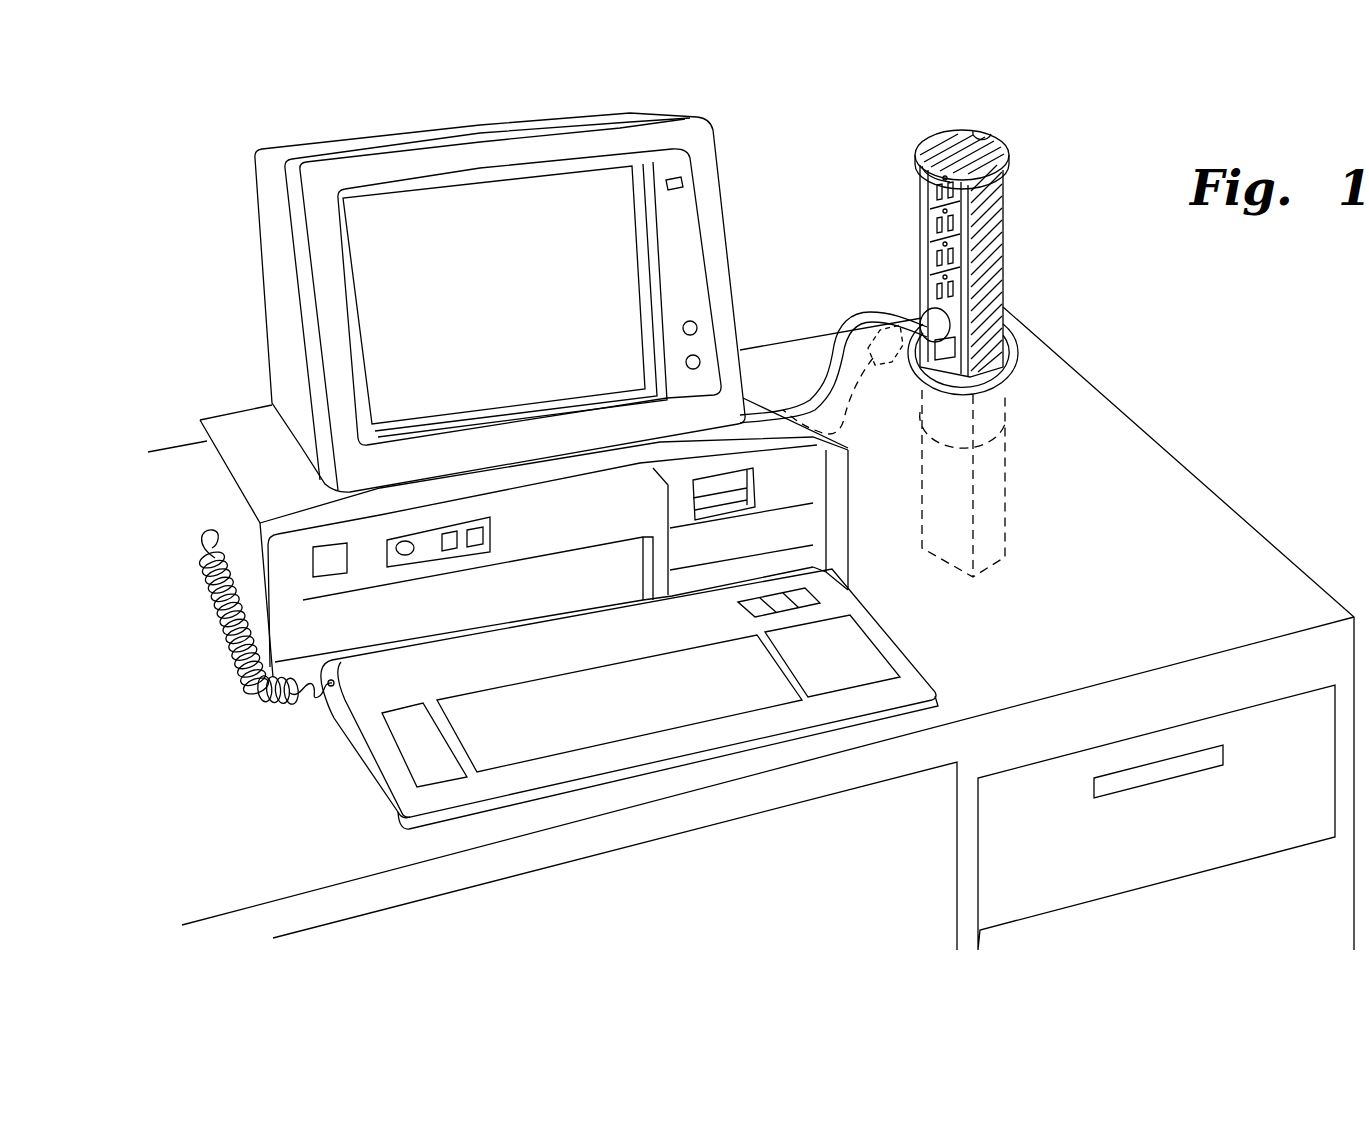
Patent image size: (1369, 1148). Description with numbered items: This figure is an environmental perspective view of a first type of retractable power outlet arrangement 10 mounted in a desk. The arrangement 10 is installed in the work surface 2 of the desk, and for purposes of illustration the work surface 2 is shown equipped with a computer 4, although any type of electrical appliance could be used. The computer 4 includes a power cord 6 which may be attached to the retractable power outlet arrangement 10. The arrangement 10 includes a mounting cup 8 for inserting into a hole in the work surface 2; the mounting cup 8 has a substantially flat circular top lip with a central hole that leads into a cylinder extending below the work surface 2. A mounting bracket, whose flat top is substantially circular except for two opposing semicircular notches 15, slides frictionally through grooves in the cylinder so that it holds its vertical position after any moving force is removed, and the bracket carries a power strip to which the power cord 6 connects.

The work surface 2 is at (1097, 415).
The computer 4 is at (236, 420).
The power cord 6 is at (782, 345).
The mounting cup 8 is at (1006, 350).
The retractable power outlet arrangement 10 is at (1005, 208).
The semicircular notches 15 is at (990, 134).